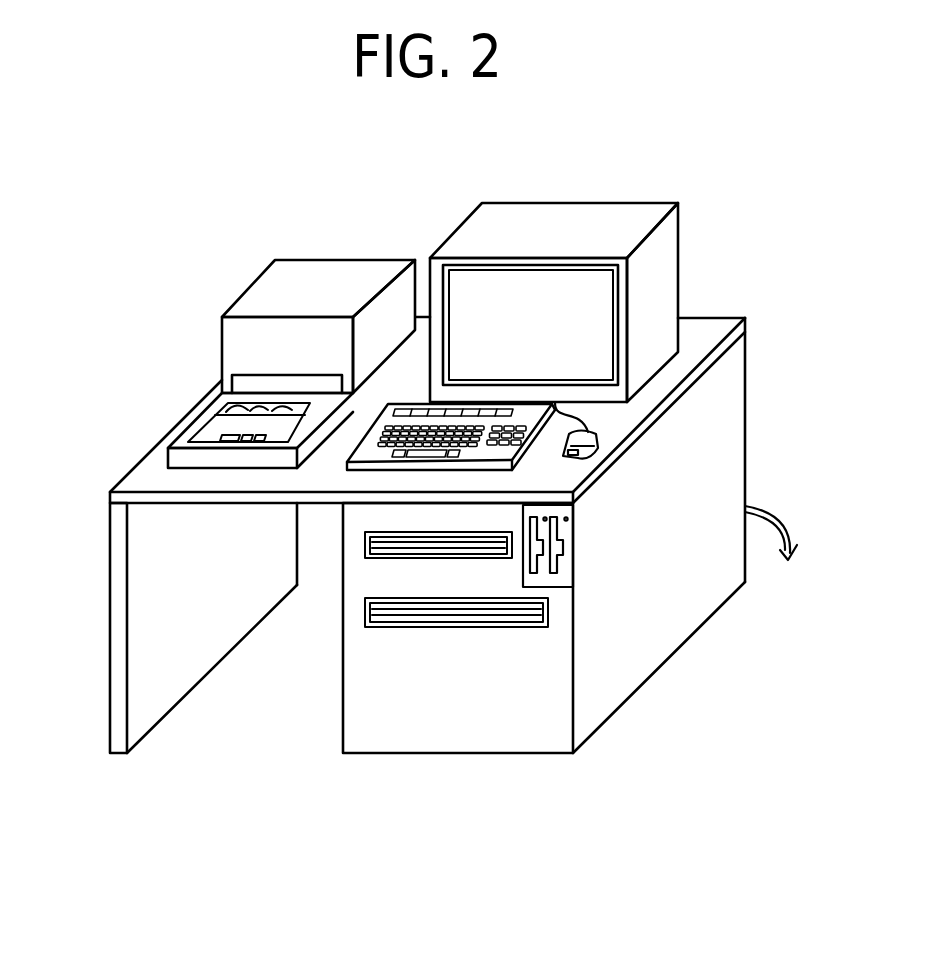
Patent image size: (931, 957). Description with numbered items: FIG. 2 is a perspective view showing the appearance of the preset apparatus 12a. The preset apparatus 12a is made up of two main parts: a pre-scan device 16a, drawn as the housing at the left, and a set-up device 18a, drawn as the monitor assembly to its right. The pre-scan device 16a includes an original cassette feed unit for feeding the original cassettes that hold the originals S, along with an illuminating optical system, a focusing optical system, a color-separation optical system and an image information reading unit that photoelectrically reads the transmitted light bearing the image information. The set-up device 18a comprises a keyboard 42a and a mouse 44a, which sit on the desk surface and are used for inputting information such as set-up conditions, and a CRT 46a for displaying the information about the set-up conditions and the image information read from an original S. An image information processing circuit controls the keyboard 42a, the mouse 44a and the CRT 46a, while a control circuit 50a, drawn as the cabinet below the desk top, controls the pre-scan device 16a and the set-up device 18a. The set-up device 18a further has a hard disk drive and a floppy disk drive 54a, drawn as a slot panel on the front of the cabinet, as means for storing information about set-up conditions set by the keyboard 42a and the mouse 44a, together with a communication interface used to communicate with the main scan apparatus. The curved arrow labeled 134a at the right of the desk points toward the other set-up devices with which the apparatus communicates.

The preset apparatus 12a is at (616, 114).
The pre-scan device 16a is at (232, 280).
The set-up device 18a is at (590, 188).
The keyboard 42a is at (375, 452).
The mouse 44a is at (596, 440).
The CRT 46a is at (670, 260).
The control circuit 50a is at (453, 730).
The floppy disk drive 54a is at (565, 563).
The direction arrow 134a is at (787, 522).